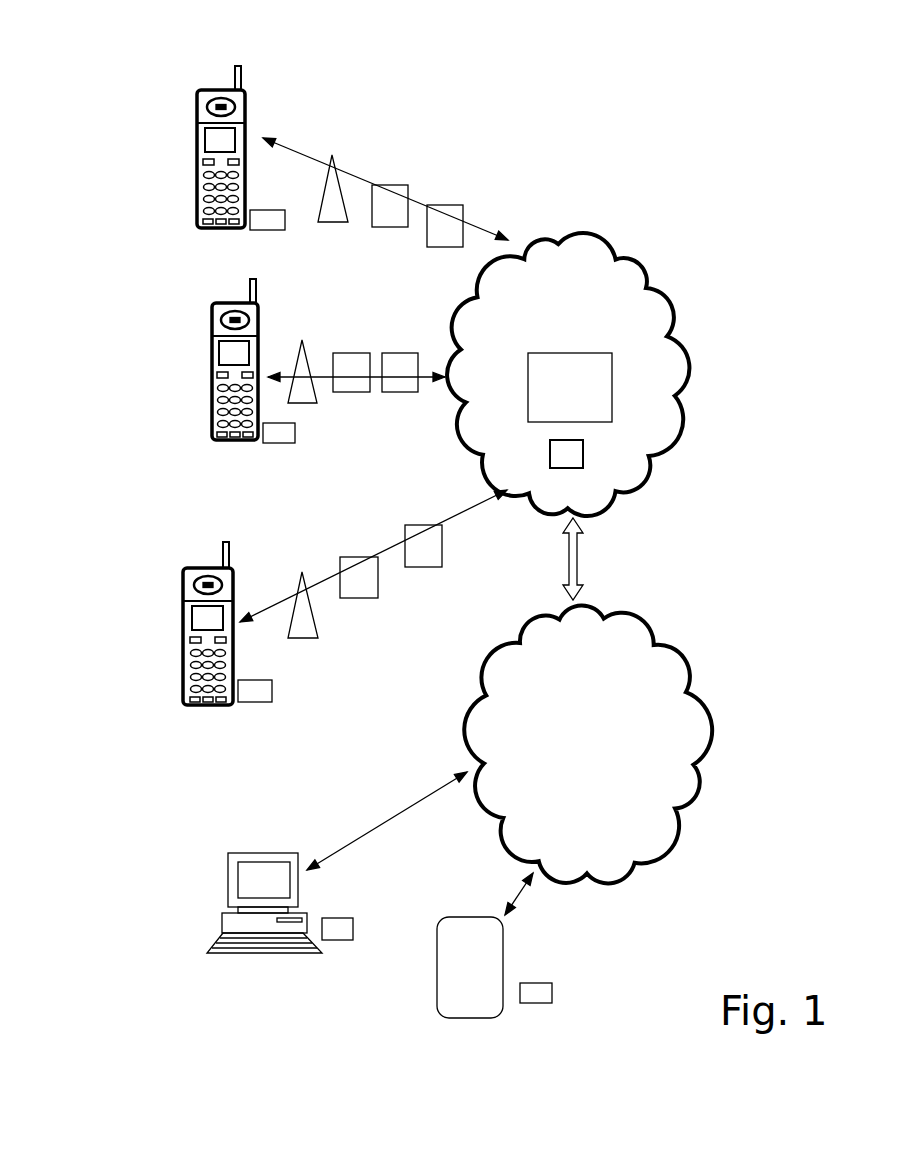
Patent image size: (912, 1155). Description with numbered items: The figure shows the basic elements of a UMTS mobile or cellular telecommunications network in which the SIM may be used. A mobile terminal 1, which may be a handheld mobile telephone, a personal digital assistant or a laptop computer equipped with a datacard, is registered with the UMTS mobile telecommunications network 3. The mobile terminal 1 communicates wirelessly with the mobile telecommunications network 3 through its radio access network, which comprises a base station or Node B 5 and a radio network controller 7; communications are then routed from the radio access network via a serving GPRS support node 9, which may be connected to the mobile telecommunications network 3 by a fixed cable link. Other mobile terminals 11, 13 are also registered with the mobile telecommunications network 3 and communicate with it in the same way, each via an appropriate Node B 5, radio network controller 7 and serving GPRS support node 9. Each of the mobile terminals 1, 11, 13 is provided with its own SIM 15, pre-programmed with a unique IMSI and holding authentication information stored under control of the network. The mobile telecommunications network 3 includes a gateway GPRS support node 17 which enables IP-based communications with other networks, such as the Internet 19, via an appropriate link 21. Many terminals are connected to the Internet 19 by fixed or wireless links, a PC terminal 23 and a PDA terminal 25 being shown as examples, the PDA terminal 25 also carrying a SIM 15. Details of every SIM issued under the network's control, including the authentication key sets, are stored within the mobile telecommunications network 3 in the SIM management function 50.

The mobile terminal 1 is at (247, 107).
The mobile telecommunications network 3 is at (558, 247).
The base station (Node B) 5 is at (332, 155).
The radio network controller (RNC) 7 is at (393, 200).
The serving GPRS support node (SGSN) 9 is at (448, 213).
The mobile terminal 11 is at (208, 348).
The mobile terminal 13 is at (182, 652).
The SIM 15 is at (268, 222).
The gateway GPRS support node (GGSN) 17 is at (577, 455).
The Internet 19 is at (688, 693).
The link 21 is at (582, 552).
The PC terminal 23 is at (220, 920).
The PDA terminal 25 is at (452, 1020).
The SIM management function 50 is at (547, 370).